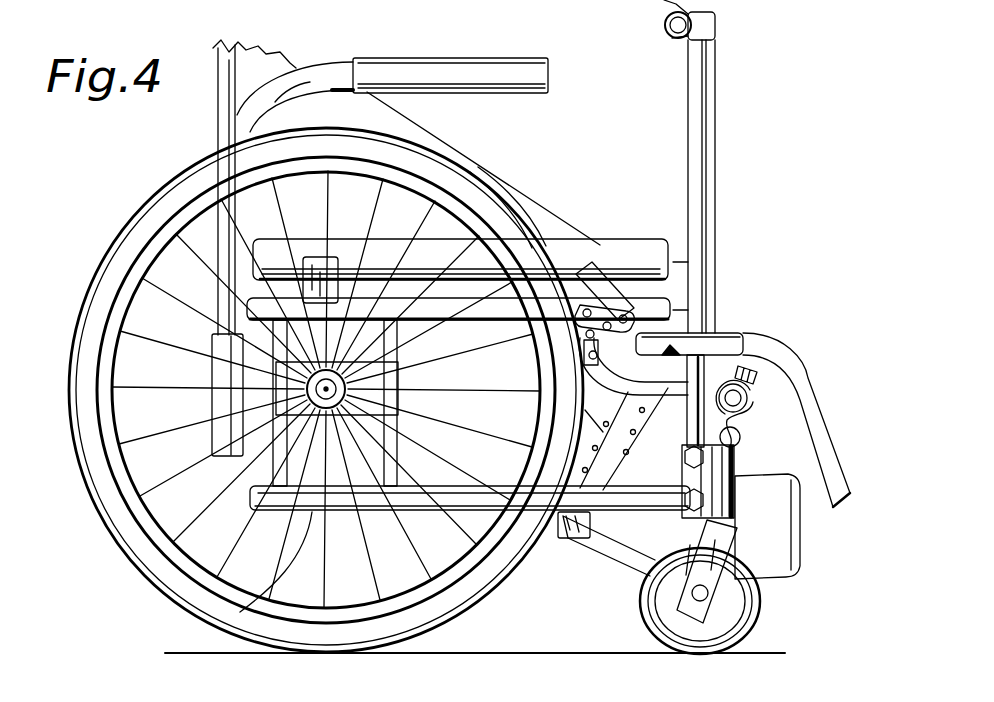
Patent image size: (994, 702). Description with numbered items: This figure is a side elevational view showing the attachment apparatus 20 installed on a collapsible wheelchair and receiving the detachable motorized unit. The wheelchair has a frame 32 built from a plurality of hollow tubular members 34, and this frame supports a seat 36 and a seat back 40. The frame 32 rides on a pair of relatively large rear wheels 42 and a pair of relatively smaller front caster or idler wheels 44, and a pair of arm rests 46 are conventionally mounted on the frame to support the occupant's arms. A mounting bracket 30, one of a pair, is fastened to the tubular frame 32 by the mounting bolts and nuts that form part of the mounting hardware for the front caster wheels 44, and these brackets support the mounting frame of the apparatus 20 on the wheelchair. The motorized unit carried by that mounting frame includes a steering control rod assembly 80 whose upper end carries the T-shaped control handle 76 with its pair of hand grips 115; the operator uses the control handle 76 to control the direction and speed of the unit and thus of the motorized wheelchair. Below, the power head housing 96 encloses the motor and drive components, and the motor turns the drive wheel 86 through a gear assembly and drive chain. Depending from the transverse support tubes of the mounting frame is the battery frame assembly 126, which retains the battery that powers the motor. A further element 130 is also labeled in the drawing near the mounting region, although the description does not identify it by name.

The apparatus 20 is at (750, 430).
The mounting bracket 30 is at (733, 418).
The frame 32 is at (214, 617).
The hollow tubular member 34 is at (586, 548).
The seat 36 is at (605, 243).
The seat back 40 is at (218, 68).
The rear wheel 42 is at (118, 265).
The front caster wheel 44 is at (662, 604).
The arm rest 46 is at (518, 78).
The control handle 76 is at (735, 40).
The steering control rod assembly 80 is at (724, 300).
The drive wheel 86 is at (745, 645).
The power head housing 96 is at (778, 540).
The hand grip 115 is at (668, 44).
The battery frame assembly 126 is at (600, 443).
The curved link 130 is at (602, 388).